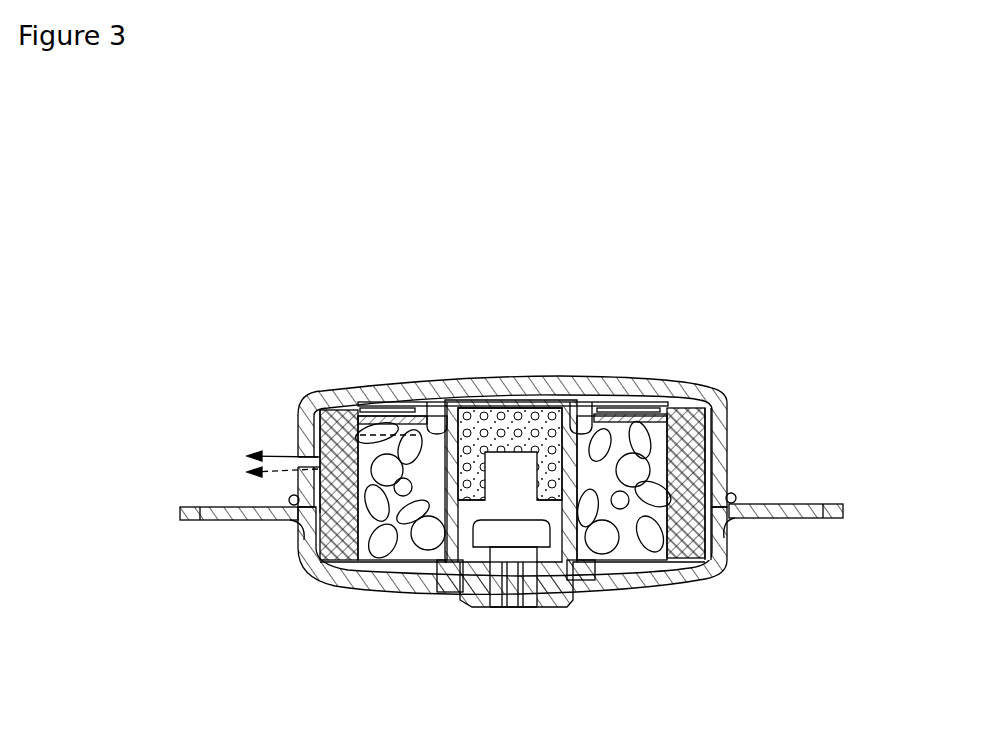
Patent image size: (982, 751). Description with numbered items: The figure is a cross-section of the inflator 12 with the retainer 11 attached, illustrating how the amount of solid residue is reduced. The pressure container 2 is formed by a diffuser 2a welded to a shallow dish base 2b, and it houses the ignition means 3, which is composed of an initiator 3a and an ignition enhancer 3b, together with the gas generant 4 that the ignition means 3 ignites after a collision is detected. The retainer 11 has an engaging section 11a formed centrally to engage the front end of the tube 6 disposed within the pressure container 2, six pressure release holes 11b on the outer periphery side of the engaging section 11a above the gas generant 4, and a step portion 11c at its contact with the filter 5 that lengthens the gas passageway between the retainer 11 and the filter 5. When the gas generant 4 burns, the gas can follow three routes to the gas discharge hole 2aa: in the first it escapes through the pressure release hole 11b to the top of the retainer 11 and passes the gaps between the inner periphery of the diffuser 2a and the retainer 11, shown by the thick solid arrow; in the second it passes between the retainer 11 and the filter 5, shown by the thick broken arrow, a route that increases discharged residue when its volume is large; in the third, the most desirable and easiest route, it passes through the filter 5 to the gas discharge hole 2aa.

The inflator 12 is at (338, 350).
The pressure container 2 is at (695, 594).
The diffuser 2a is at (517, 378).
The base 2b is at (360, 592).
The gas discharge hole 2aa is at (300, 460).
The ignition means 3 is at (540, 683).
The initiator 3a is at (510, 510).
The ignition enhancer 3b is at (457, 596).
The gas generant 4 is at (650, 562).
The filter 5 is at (697, 533).
The tube 6 is at (605, 562).
The retainer 11 is at (737, 243).
The engaging section 11a is at (579, 402).
The pressure release hole 11b is at (420, 408).
The step portion 11c is at (610, 402).